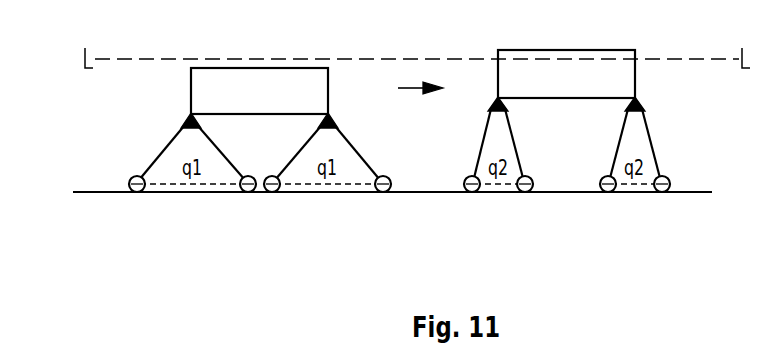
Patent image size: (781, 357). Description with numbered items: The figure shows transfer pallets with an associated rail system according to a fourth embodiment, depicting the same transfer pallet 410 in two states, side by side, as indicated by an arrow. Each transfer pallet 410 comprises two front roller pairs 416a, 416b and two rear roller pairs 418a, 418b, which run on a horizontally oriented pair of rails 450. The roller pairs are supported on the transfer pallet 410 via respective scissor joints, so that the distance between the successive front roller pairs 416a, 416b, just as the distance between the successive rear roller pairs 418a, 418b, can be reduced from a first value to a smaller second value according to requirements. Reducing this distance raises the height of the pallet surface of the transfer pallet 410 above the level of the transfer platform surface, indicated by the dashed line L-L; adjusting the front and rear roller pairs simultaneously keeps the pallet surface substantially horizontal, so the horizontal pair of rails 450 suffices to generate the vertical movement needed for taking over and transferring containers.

The transfer pallet 410 is at (293, 68).
The pair of rails 450 is at (84, 192).
The rear roller pair 418a is at (137, 192).
The rear roller pair 418b is at (248, 192).
The front roller pair 416a is at (272, 192).
The front roller pair 416b is at (383, 192).